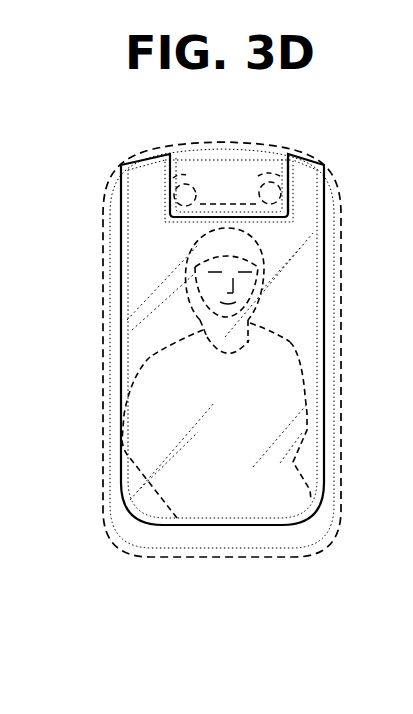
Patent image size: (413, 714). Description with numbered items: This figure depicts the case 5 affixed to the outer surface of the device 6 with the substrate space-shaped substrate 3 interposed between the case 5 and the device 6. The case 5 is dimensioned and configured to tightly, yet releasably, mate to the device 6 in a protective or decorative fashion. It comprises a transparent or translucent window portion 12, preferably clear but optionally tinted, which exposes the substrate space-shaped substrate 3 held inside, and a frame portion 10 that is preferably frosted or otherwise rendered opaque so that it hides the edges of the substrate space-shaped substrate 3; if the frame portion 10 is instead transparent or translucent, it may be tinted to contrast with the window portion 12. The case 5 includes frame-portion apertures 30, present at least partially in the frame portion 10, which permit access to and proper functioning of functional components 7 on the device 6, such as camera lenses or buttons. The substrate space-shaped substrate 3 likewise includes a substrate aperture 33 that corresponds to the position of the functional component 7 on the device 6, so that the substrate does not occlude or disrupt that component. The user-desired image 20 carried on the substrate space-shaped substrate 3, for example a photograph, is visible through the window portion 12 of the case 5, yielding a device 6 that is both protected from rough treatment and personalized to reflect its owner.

The case 5 is at (122, 157).
The device 6 is at (138, 157).
The functional component 7 is at (185, 195).
The frame-portion aperture 30 is at (226, 207).
The substrate aperture 33 is at (288, 192).
The frame portion 10 is at (117, 248).
The window portion 12 is at (150, 338).
The substrate space-shaped substrate 3 is at (137, 363).
The image 20 is at (217, 400).